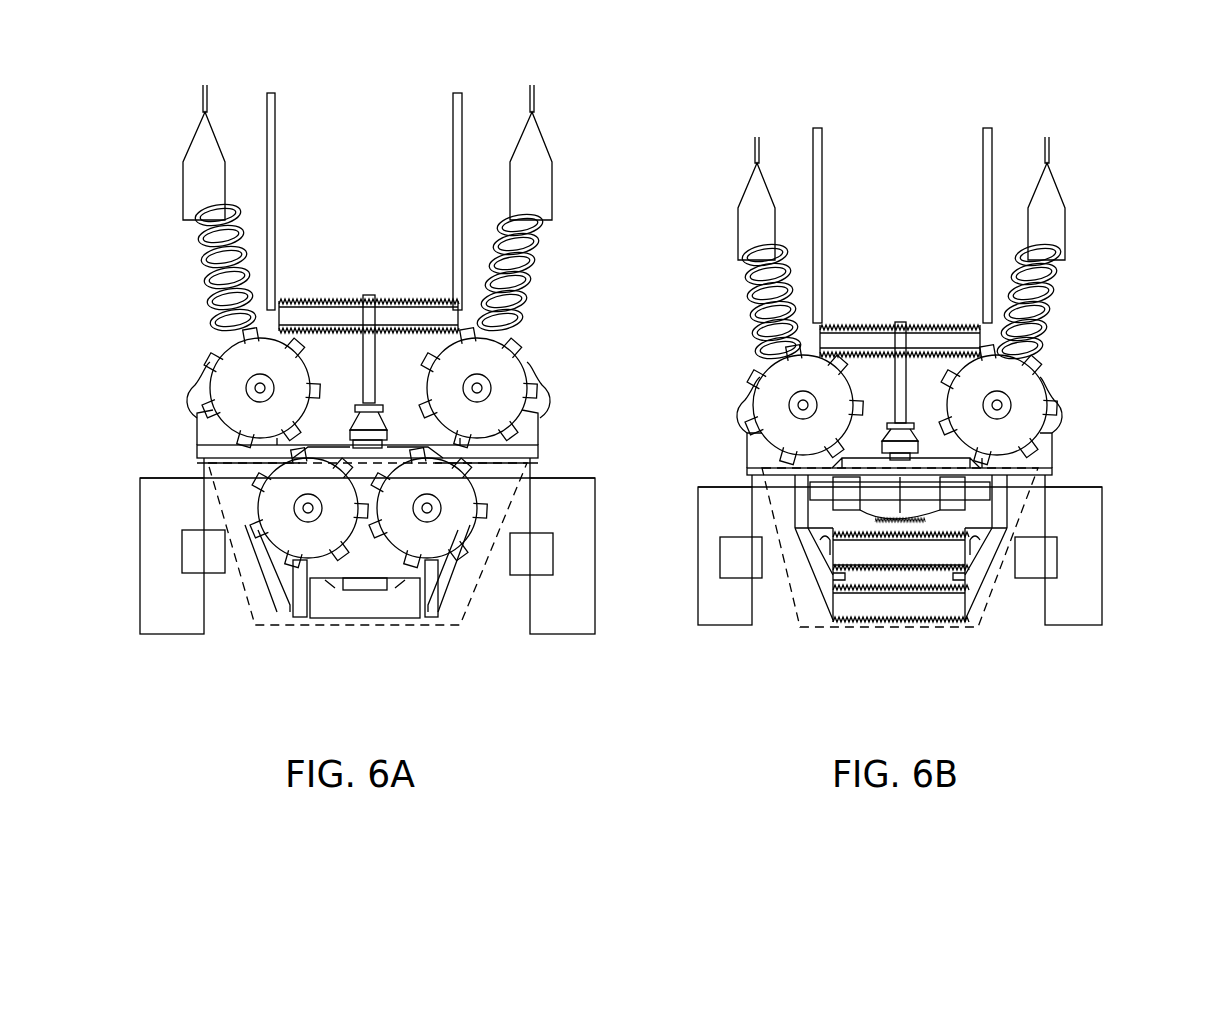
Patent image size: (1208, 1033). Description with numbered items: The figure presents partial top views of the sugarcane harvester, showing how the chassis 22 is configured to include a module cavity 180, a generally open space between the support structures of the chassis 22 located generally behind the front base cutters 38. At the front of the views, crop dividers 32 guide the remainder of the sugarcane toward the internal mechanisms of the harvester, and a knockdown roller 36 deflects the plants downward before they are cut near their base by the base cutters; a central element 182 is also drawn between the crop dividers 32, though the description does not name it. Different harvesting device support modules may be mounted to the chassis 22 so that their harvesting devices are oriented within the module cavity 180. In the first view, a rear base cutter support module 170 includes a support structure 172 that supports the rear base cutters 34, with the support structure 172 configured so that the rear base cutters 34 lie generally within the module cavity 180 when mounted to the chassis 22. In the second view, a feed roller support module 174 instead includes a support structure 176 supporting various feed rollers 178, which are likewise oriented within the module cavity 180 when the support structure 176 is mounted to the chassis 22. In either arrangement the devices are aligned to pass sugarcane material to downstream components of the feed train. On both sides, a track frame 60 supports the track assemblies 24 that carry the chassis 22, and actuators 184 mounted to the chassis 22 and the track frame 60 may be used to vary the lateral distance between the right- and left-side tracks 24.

In FIG. 6A, the chassis 22 is at (197, 447).
In FIG. 6B, the chassis 22 is at (1030, 468).
In FIG. 6A, the track assemblies 24 is at (177, 592).
In FIG. 6B, the track assemblies 24 is at (703, 627).
In FIG. 6A, the crop dividers 32 is at (200, 277).
In FIG. 6B, the crop dividers 32 is at (753, 322).
In FIG. 6A, the rear base cutters 34 is at (250, 498).
In FIG. 6A, the knockdown roller 36 is at (345, 318).
In FIG. 6B, the knockdown roller 36 is at (865, 342).
In FIG. 6A, the front base cutters 38 is at (191, 411).
In FIG. 6B, the front base cutters 38 is at (745, 437).
In FIG. 6A, the track frame 60 is at (140, 575).
In FIG. 6B, the track frame 60 is at (686, 578).
In FIG. 6A, the rear base cutter support module 170 is at (340, 652).
In FIG. 6A, the support structure 172 is at (470, 595).
In FIG. 6B, the feed roller support module 174 is at (877, 640).
In FIG. 6B, the support structure 176 is at (803, 537).
In FIG. 6B, the feed rollers 178 is at (912, 563).
In FIG. 6A, the module cavity 180 is at (250, 602).
In FIG. 6B, the module cavity 180 is at (987, 607).
In FIG. 6A, the shaft 182 is at (372, 312).
In FIG. 6B, the shaft 182 is at (893, 340).
In FIG. 6A, the actuators 184 is at (182, 557).
In FIG. 6B, the actuators 184 is at (733, 537).